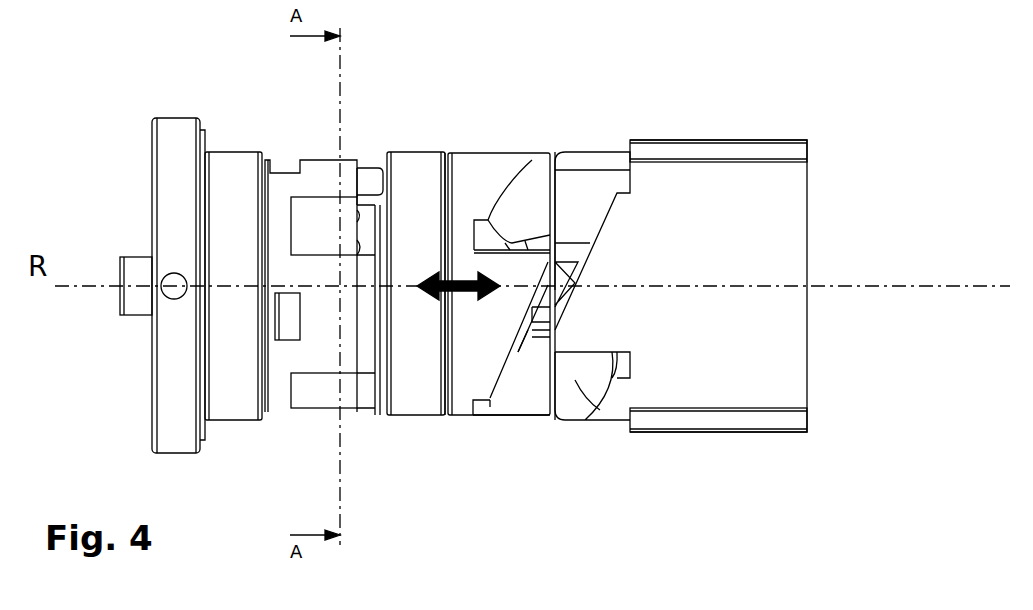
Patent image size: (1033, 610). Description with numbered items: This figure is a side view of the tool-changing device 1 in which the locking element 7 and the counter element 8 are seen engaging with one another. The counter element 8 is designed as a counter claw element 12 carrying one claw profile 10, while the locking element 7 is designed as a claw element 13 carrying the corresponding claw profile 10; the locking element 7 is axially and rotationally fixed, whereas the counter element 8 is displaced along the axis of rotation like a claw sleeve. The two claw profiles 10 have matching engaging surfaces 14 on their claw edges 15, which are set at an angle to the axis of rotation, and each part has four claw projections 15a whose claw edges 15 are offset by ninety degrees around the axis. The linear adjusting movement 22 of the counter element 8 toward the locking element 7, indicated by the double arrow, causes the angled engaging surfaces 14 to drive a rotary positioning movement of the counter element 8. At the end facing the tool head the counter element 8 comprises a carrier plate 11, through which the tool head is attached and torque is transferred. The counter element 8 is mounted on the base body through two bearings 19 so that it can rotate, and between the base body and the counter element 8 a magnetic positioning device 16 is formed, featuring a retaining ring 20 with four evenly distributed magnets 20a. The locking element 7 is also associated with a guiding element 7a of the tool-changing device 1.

The tool-changing device 1 is at (660, 112).
The locking element 7 is at (793, 228).
The guiding element 7a is at (785, 415).
The counter element 8 is at (483, 170).
The claw profile 10 is at (533, 352).
The carrier plate 11 is at (183, 210).
The counter claw element 12 is at (460, 162).
The claw element 13 is at (720, 212).
The engaging surfaces 14 is at (518, 352).
The claw edges 15 is at (593, 238).
The claw projections 15a is at (609, 185).
The positioning device 16 is at (327, 350).
The bearings 19 is at (221, 397).
The retaining ring 20 is at (278, 212).
The magnets 20a is at (305, 210).
The adjusting movement 22 is at (465, 287).